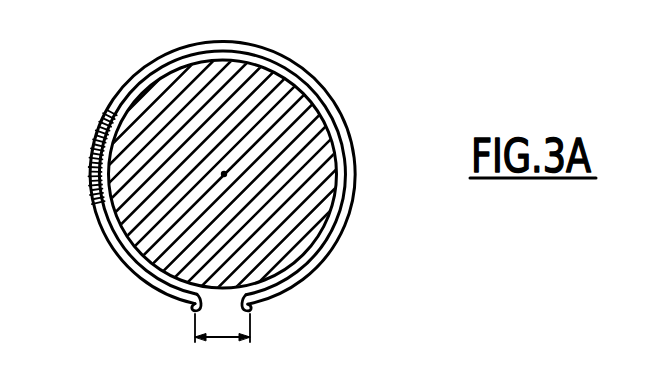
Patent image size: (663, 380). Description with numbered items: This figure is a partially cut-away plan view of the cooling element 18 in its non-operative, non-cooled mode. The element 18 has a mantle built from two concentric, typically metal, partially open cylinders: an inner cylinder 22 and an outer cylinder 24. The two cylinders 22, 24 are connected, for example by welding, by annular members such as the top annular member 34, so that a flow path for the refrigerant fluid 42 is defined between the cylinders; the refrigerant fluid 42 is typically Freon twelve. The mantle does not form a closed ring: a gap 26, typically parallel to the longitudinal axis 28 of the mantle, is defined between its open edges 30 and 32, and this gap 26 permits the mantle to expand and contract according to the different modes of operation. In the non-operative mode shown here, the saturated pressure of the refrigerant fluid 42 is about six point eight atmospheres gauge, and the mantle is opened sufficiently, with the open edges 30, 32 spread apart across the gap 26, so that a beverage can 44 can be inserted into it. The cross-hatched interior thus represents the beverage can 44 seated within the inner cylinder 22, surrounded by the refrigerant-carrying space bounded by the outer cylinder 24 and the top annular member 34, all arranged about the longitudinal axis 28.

The cooling element 18 is at (262, 175).
The inner cylinder 22 is at (338, 128).
The outer cylinder 24 is at (356, 154).
The gap 26 is at (226, 338).
The longitudinal axis 28 is at (225, 176).
The open edge 30 is at (196, 306).
The open edge 32 is at (247, 306).
The top annular member 34 is at (266, 44).
The refrigerant fluid 42 is at (93, 152).
The beverage can 44 is at (163, 108).